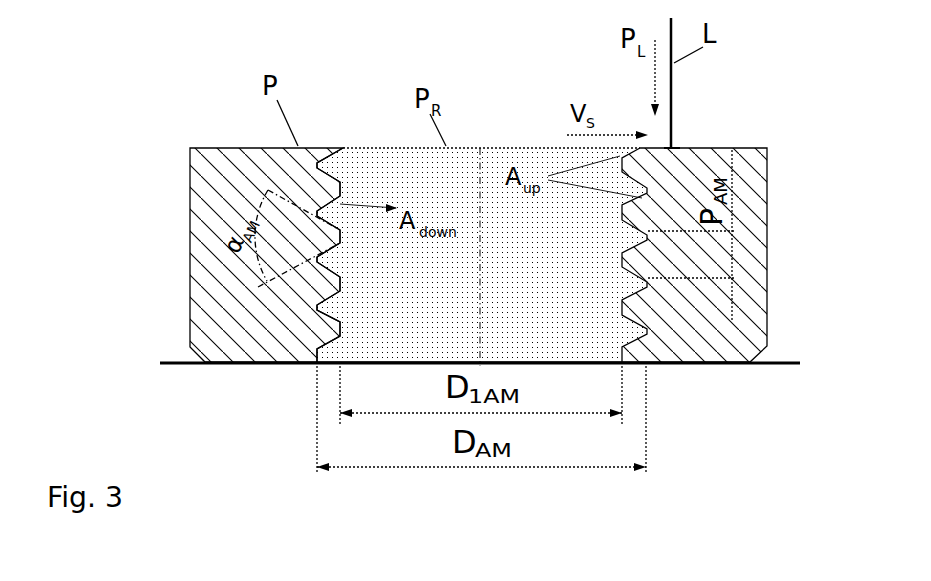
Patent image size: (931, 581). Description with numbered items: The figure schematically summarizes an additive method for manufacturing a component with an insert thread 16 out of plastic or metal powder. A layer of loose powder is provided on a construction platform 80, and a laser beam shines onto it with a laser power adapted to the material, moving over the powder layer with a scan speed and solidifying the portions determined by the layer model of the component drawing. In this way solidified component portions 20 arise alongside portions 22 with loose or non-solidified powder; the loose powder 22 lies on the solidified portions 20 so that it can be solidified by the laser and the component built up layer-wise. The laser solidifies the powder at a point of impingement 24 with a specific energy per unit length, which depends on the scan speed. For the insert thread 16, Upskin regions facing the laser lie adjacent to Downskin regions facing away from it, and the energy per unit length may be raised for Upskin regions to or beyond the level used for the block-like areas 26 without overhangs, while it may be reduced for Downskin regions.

The insert thread 16 is at (341, 293).
The solidified component portions 20 is at (213, 289).
The portions with loose or non-solidified powder 22 is at (450, 328).
The point of impingement 24 is at (677, 146).
The block-like areas 26 is at (750, 165).
The construction platform 80 is at (773, 364).